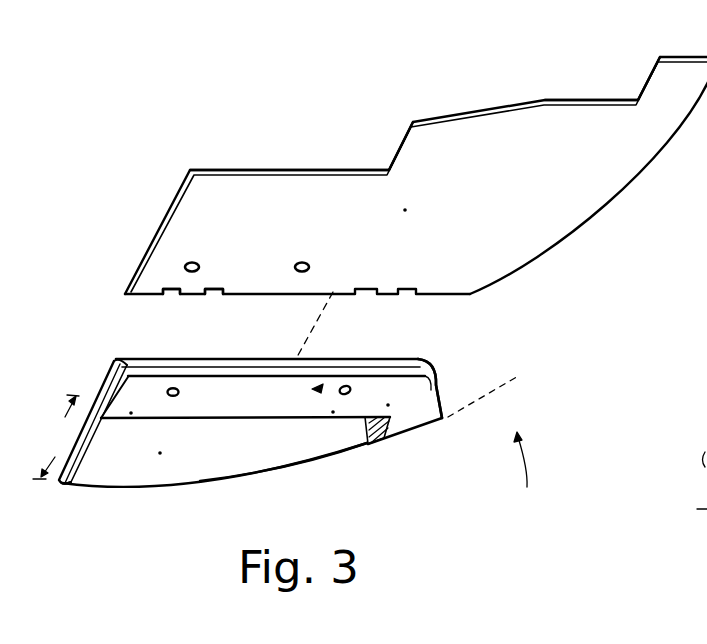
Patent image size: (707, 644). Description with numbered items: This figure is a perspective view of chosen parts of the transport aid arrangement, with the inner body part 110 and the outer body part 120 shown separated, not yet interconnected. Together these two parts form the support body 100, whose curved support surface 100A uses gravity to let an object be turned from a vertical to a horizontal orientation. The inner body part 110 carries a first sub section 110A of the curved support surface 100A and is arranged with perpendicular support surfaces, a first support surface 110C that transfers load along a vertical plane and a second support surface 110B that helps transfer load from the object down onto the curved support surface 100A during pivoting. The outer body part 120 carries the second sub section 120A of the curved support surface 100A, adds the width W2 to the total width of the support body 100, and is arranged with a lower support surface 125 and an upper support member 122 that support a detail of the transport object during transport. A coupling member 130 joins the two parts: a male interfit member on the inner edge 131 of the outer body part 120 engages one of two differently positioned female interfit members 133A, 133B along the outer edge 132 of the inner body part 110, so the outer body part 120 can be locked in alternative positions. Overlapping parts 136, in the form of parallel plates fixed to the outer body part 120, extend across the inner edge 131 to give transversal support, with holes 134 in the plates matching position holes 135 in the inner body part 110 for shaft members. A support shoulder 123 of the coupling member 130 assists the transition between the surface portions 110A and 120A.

The support body 100 is at (531, 474).
The curved support surface 100A is at (503, 383).
The inner body part 110 is at (187, 233).
The first sub section of the curved support surface 110A is at (547, 247).
The second support surface 110B is at (230, 173).
The first support surface 110C is at (400, 143).
The outer body part 120 is at (277, 450).
The second sub section of the curved support surface 120A is at (333, 455).
The upper support member 122 is at (368, 445).
The support shoulder 123 is at (436, 388).
The lower support surface 125 is at (67, 460).
The coupling member 130 is at (86, 379).
The inner edge 131 is at (113, 371).
The outer edge 132 is at (438, 295).
The female interfit member 133A is at (173, 296).
The female interfit member 133B is at (218, 296).
The holes 134 is at (336, 391).
The position holes 135 is at (200, 267).
The overlapping parts 136 is at (314, 389).
The width of the outer body part W2 is at (56, 437).